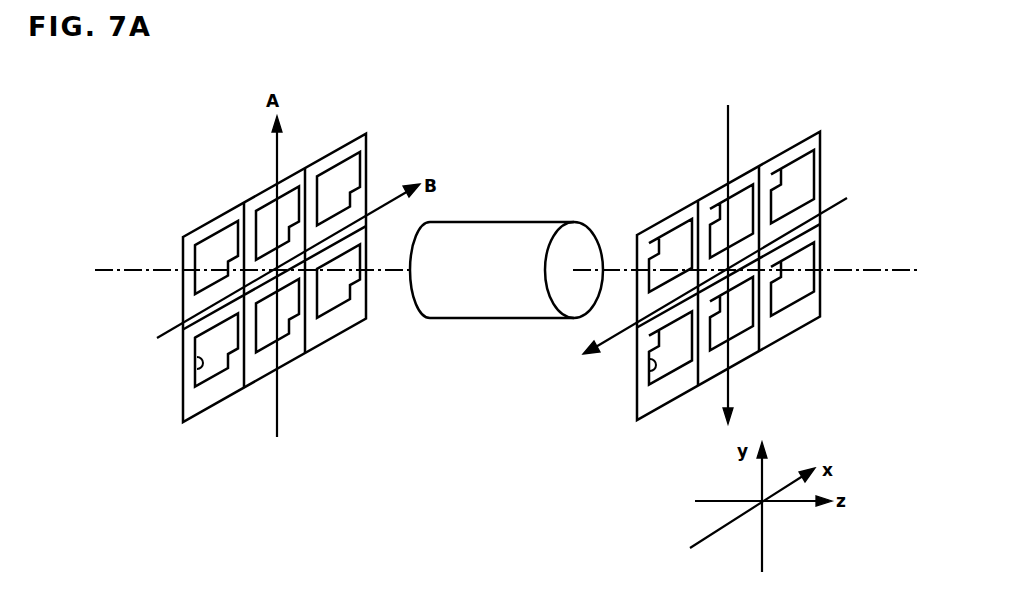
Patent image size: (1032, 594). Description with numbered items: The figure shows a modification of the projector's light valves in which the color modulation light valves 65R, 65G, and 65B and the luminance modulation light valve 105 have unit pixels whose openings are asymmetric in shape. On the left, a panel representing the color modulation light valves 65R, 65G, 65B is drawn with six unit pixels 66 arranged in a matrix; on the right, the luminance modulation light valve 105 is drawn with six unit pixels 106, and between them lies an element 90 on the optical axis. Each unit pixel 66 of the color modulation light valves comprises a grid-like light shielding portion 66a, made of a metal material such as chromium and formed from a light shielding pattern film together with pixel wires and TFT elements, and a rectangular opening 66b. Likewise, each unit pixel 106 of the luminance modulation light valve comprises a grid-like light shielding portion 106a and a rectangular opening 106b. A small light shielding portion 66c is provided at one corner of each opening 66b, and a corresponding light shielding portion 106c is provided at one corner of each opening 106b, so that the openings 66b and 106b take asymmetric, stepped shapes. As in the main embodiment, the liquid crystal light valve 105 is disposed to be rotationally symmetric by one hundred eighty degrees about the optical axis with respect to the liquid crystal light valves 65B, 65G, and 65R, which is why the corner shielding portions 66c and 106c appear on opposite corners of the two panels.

The color modulation light valve 65R is at (282, 266).
The color modulation light valve 65G is at (282, 266).
The color modulation light valve 65B is at (366, 131).
The unit pixel 66 is at (211, 406).
The light shielding portion 66a is at (237, 393).
The opening 66b is at (186, 385).
The light shielding portion 66c is at (294, 327).
The projection lens 90 is at (505, 222).
The luminance modulation light valve 105 is at (826, 108).
The unit pixel 106 is at (797, 317).
The light shielding portion 106a is at (668, 402).
The opening 106b is at (638, 381).
The light shielding portion 106c is at (774, 172).